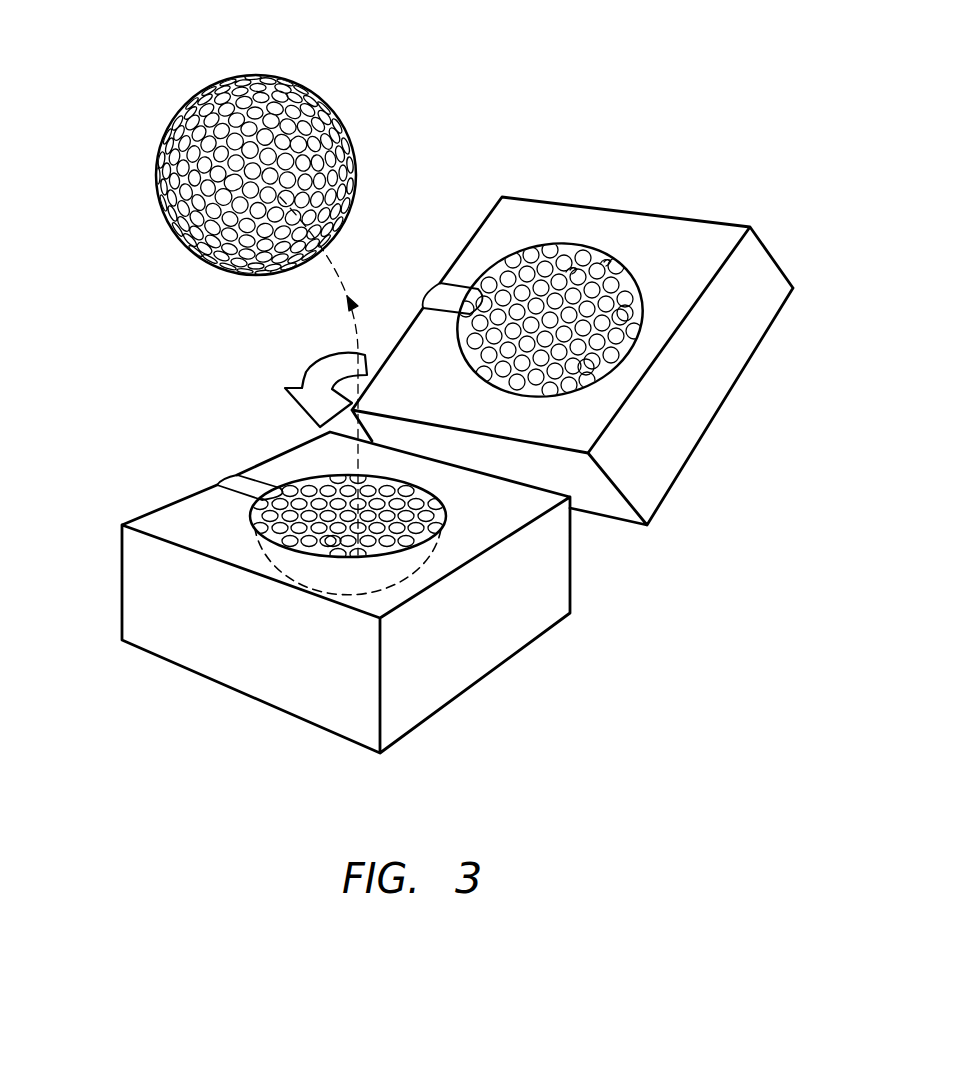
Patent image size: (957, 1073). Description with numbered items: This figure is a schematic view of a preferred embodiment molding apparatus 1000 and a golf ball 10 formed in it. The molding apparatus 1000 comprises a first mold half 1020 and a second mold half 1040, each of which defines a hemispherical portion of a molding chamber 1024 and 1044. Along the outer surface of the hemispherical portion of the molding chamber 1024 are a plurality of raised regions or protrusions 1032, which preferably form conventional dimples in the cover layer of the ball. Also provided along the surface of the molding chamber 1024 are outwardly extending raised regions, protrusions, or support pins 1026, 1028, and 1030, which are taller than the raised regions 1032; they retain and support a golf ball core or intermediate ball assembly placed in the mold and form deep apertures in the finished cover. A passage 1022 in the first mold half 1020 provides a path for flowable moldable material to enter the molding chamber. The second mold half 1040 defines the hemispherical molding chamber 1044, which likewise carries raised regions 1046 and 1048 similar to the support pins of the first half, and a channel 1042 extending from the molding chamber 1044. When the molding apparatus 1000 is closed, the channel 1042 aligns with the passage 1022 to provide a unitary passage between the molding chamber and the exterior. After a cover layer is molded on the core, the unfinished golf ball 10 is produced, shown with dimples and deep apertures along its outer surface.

The unfinished golf ball 10 is at (217, 112).
The molding apparatus 1000 is at (558, 91).
The first mold half 1020 is at (525, 212).
The passage 1022 is at (457, 295).
The hemispherical portion of molding chamber 1024 is at (609, 262).
The support pin 1026 is at (573, 264).
The support pin 1028 is at (505, 272).
The support pin 1030 is at (625, 320).
The raised regions 1032 is at (585, 367).
The second mold half 1040 is at (303, 457).
The channel 1042 is at (237, 481).
The hemispherical molding chamber 1044 is at (260, 533).
The raised region 1046 is at (333, 533).
The raised region 1048 is at (440, 535).